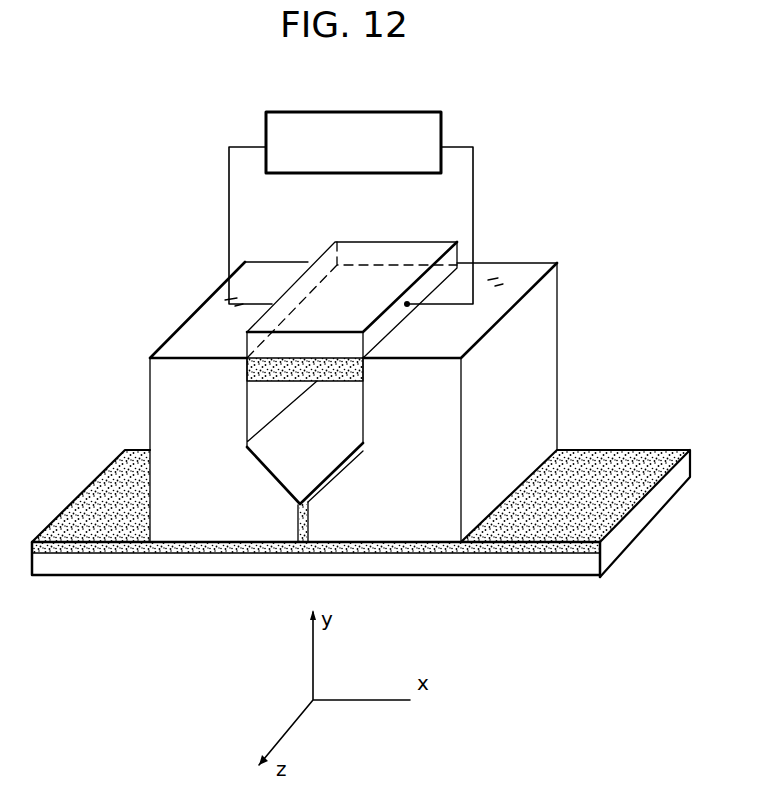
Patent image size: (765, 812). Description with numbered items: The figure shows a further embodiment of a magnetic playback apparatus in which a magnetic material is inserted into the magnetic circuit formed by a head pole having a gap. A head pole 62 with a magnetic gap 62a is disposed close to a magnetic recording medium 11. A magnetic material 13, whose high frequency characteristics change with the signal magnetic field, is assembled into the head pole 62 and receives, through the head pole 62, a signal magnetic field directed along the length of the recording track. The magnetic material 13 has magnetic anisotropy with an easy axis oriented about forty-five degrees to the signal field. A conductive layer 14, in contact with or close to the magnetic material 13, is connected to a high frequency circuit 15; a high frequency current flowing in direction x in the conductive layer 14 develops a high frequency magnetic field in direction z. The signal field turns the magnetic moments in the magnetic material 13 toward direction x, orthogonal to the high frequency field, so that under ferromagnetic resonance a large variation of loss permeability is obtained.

The magnetic recording medium 11 is at (605, 460).
The magnetic material 13 is at (332, 382).
The conductive layer 14 is at (367, 242).
The high frequency circuit 15 is at (412, 112).
The head pole 62 is at (549, 318).
The magnetic gap 62a is at (309, 521).